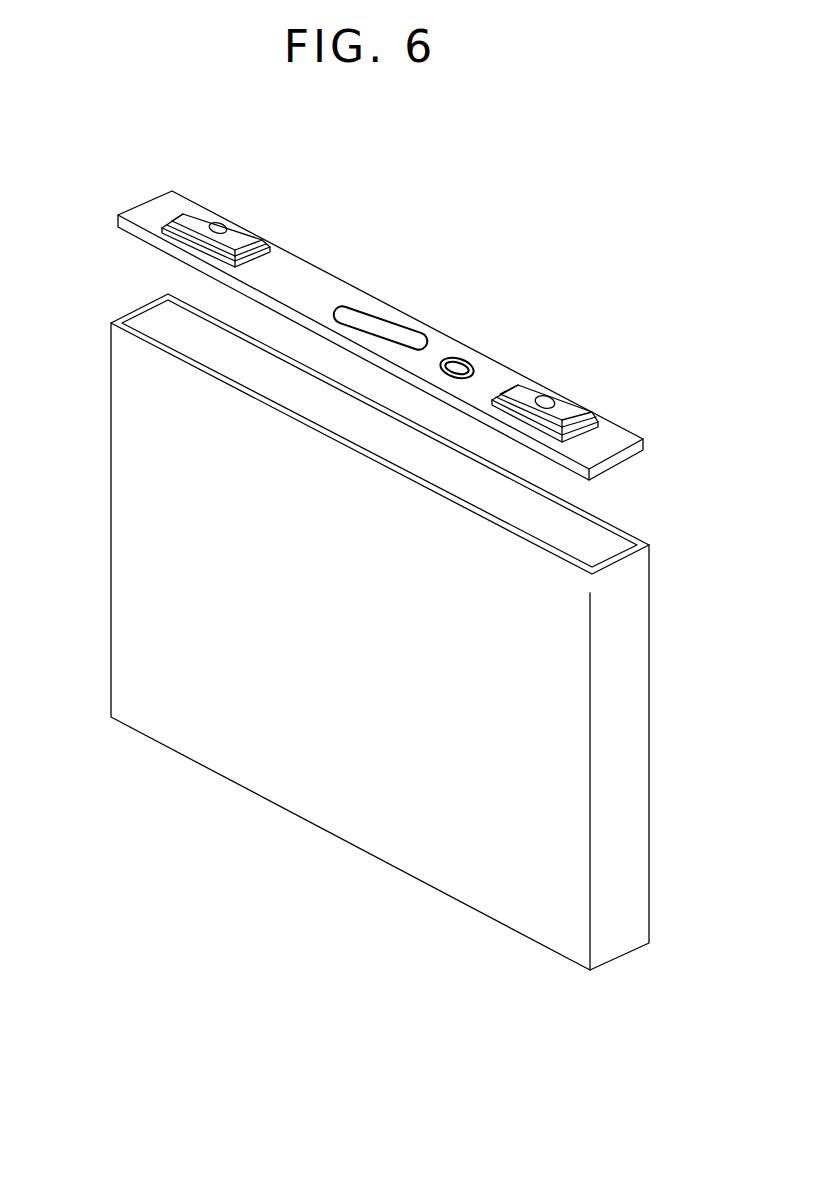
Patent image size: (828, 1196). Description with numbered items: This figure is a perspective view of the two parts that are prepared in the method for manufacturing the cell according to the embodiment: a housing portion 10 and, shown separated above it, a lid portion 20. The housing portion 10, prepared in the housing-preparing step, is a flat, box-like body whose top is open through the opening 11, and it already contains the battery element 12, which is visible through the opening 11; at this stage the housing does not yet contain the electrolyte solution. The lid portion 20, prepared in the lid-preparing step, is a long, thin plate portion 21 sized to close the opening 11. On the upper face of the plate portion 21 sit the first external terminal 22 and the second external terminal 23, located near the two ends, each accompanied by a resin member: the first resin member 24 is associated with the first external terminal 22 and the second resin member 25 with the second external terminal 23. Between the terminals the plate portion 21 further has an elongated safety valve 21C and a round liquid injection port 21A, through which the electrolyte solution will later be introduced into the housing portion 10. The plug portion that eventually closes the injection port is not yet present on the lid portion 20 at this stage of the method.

The housing portion 10 is at (373, 618).
The opening 11 is at (613, 558).
The battery element 12 is at (183, 345).
The lid portion 20 is at (380, 314).
The plate portion 21 is at (380, 335).
The liquid injection port 21A is at (460, 361).
The safety valve 21C is at (375, 328).
The first external terminal 22 is at (205, 220).
The second external terminal 23 is at (535, 395).
The first resin member 24 is at (260, 247).
The second resin member 25 is at (590, 415).